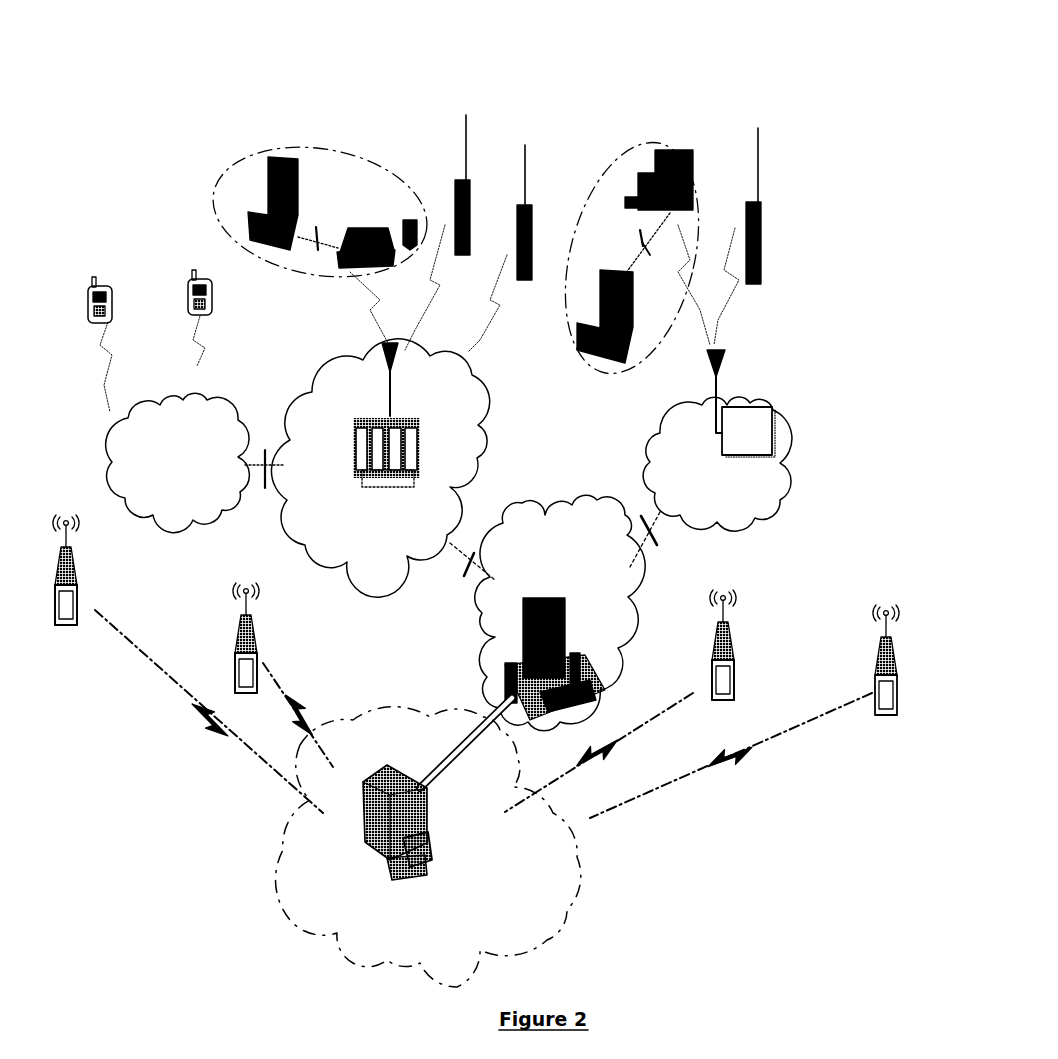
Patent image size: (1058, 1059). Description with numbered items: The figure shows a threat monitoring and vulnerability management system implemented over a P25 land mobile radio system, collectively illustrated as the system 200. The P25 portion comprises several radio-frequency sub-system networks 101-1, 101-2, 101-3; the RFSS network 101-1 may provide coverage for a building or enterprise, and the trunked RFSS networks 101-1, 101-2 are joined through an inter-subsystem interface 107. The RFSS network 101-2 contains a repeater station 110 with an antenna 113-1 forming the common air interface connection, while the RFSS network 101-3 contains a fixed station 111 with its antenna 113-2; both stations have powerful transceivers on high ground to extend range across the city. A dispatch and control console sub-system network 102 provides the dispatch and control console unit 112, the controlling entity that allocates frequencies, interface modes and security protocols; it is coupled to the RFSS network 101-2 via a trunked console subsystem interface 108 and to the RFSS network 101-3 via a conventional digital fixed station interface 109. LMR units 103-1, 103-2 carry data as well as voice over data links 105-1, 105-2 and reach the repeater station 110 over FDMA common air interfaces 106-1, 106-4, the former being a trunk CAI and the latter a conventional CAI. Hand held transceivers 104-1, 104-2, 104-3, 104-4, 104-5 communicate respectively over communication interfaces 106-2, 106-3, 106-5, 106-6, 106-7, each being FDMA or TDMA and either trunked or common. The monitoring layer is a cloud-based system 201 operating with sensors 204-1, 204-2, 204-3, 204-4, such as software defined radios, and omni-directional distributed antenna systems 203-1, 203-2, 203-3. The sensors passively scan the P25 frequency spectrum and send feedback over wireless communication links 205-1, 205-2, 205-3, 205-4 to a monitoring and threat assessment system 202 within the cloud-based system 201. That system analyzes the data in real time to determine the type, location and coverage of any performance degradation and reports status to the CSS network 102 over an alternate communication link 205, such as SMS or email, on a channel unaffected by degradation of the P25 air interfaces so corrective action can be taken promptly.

The system 200 is at (590, 68).
The radio-frequency sub-system (RFSS) network 101-1 is at (143, 397).
The radio-frequency sub-system (RFSS) network 101-2 is at (477, 395).
The radio-frequency sub-system (RFSS) network 101-3 is at (783, 493).
The dispatch and control console sub-system (CSS) network 102 is at (490, 612).
The LMR unit 103-1 is at (292, 150).
The LMR unit 103-2 is at (675, 150).
The P25 hand held transceiver 104-1 is at (455, 188).
The P25 hand held transceiver 104-2 is at (532, 218).
The P25 hand held transceiver 104-3 is at (762, 217).
The P25 hand held transceiver 104-4 is at (90, 282).
The P25 hand held transceiver 104-5 is at (197, 276).
The data link 105-1 is at (312, 240).
The data link 105-2 is at (648, 250).
The FDMA common air interface (CAI) 106-1 is at (362, 313).
The communication interface 106-2 is at (422, 284).
The communication interface 106-3 is at (492, 300).
The FDMA common air interface (CAI) 106-4 is at (683, 258).
The communication interface 106-5 is at (727, 292).
The communication interface 106-6 is at (95, 383).
The communication interface 106-7 is at (207, 322).
The inter-subsystem interface (ISSI) 107 is at (273, 466).
The trunked console subsystem interface (CSSI) 108 is at (450, 540).
The conventional digital fixed station interface (DFSI) 109 is at (665, 515).
The repeater station 110 is at (418, 435).
The fixed station 111 is at (768, 463).
The dispatch and control console unit 112 is at (555, 606).
The antenna 113-1 is at (393, 362).
The antenna 113-2 is at (722, 365).
The cloud-based system 201 is at (575, 882).
The monitoring and threat assessment system 202 is at (363, 843).
The distributed antenna system (DAS) 203-1 is at (80, 572).
The distributed antenna system (DAS) 203-2 is at (260, 653).
The distributed antenna system (DAS) 203-3 is at (737, 655).
The sensor 204-1 is at (70, 625).
The sensor 204-2 is at (243, 678).
The sensor 204-3 is at (720, 677).
The sensor 204-4 is at (893, 715).
The alternate communication link 205 is at (440, 772).
The wireless communication link 205-1 is at (218, 735).
The wireless communication link 205-2 is at (297, 676).
The wireless communication link 205-3 is at (645, 722).
The wireless communication link 205-4 is at (740, 767).